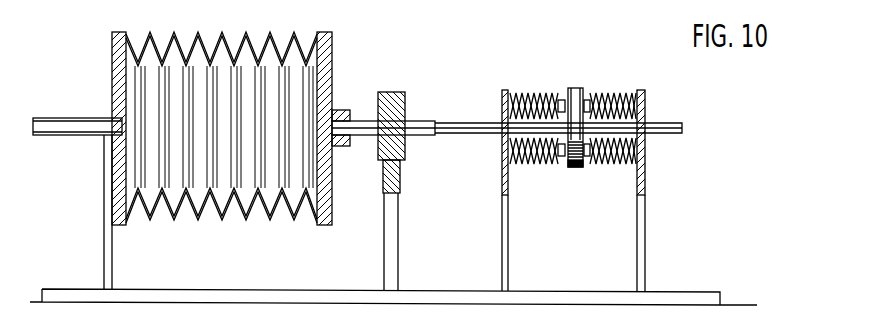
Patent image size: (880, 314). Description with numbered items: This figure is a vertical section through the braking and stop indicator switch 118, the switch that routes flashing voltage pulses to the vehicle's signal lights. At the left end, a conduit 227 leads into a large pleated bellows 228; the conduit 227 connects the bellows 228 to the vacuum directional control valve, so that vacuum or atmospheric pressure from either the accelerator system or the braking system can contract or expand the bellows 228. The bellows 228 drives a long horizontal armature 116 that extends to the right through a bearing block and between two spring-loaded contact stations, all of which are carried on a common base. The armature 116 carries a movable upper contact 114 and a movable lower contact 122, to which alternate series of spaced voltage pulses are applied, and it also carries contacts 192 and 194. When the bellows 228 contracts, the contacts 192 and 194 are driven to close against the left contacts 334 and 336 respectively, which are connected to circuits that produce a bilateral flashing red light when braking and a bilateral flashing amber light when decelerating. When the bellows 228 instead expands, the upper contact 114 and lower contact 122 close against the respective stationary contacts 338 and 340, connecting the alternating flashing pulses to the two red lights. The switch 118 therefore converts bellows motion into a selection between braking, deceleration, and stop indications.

The upper contact 114 is at (598, 90).
The armature 116 is at (369, 133).
The braking and stop indicator switch 118 is at (347, 268).
The lower contact 122 is at (585, 168).
The contact 192 is at (572, 88).
The contact 194 is at (572, 170).
The conduit 227 is at (82, 117).
The bellows 228 is at (280, 36).
The left contact 334 is at (562, 99).
The left contact 336 is at (562, 158).
The stationary contact 338 is at (590, 106).
The stationary contact 340 is at (588, 148).